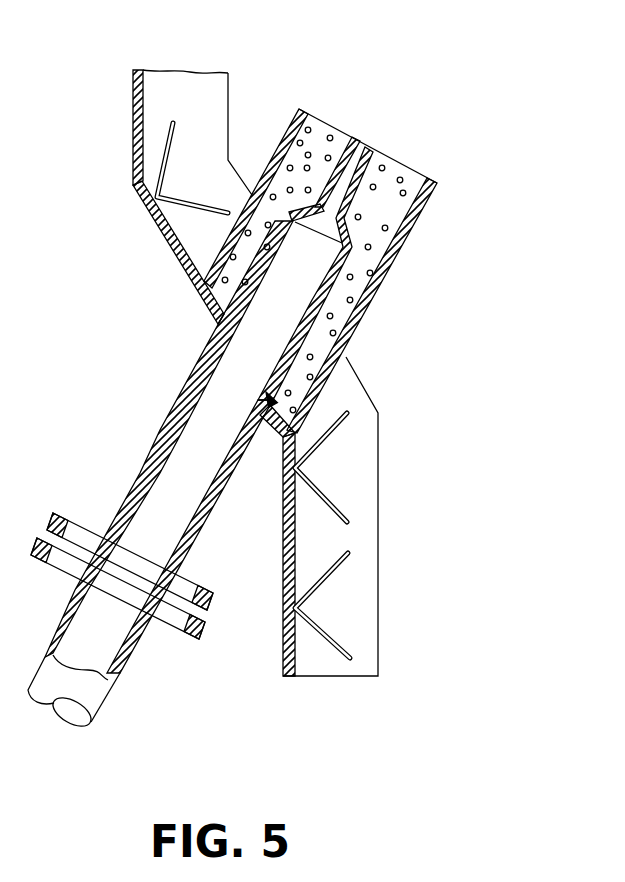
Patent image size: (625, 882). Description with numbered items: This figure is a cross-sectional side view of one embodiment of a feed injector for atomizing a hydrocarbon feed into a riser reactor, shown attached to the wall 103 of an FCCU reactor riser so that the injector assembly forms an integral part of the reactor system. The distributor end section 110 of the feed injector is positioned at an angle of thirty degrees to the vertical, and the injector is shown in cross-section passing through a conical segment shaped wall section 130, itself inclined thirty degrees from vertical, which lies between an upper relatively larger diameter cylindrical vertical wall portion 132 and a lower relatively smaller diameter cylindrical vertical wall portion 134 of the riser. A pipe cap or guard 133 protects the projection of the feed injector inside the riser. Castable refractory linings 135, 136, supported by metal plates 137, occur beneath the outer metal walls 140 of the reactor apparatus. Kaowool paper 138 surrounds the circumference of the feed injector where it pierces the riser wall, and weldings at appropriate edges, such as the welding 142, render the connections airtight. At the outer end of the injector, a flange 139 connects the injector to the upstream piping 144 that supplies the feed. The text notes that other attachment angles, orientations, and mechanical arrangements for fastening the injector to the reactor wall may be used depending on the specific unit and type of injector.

The wall 103 is at (207, 58).
The distributor end section 110 is at (359, 140).
The conical segment shaped wall section 130 is at (168, 248).
The upper cylindrical vertical wall portion 132 is at (133, 121).
The pipe cap or guard 133 is at (304, 72).
The lower cylindrical vertical wall portion 134 is at (285, 562).
The castable refractory lining 135 is at (333, 313).
The castable refractory lining 136 is at (370, 479).
The metal plates 137 is at (335, 570).
The kaowool paper 138 is at (345, 210).
The flange 139 is at (193, 642).
The outer metal walls 140 is at (186, 40).
The welding 142 is at (233, 323).
The upstream piping 144 is at (110, 688).